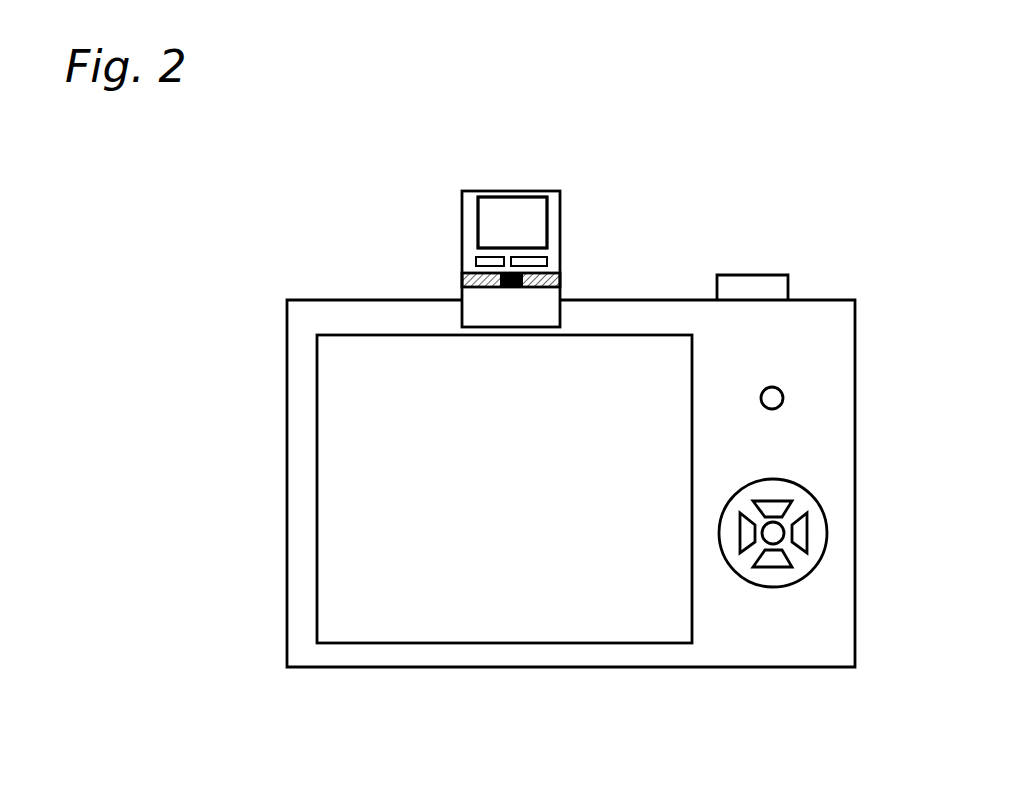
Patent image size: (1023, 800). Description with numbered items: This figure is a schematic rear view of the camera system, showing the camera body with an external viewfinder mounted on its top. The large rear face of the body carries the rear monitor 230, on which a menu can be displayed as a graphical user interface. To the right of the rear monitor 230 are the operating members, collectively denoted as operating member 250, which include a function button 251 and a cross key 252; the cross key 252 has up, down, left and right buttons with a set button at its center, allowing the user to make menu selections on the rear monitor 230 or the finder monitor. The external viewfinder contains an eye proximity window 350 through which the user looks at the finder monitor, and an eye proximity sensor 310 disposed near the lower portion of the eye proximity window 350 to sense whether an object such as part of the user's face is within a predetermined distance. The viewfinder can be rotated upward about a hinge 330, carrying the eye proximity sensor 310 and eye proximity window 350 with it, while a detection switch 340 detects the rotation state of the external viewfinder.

The rear monitor 230 is at (520, 600).
The operating member 250 is at (763, 283).
The function button 251 is at (787, 395).
The cross key 252 is at (827, 522).
The eye proximity sensor 310 is at (542, 262).
The hinge 330 is at (465, 278).
The detection switch 340 is at (500, 273).
The eye proximity window 350 is at (510, 208).